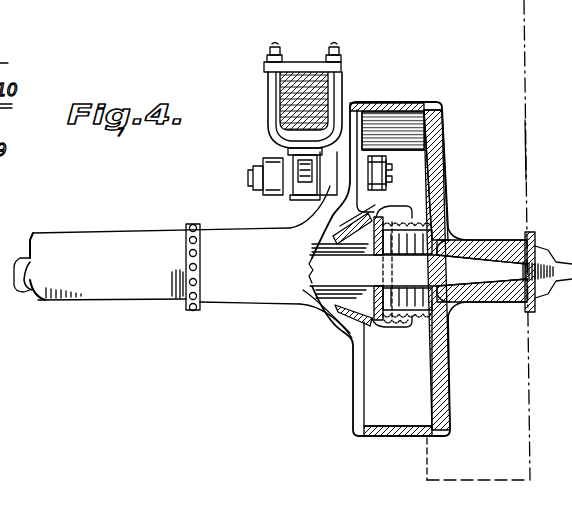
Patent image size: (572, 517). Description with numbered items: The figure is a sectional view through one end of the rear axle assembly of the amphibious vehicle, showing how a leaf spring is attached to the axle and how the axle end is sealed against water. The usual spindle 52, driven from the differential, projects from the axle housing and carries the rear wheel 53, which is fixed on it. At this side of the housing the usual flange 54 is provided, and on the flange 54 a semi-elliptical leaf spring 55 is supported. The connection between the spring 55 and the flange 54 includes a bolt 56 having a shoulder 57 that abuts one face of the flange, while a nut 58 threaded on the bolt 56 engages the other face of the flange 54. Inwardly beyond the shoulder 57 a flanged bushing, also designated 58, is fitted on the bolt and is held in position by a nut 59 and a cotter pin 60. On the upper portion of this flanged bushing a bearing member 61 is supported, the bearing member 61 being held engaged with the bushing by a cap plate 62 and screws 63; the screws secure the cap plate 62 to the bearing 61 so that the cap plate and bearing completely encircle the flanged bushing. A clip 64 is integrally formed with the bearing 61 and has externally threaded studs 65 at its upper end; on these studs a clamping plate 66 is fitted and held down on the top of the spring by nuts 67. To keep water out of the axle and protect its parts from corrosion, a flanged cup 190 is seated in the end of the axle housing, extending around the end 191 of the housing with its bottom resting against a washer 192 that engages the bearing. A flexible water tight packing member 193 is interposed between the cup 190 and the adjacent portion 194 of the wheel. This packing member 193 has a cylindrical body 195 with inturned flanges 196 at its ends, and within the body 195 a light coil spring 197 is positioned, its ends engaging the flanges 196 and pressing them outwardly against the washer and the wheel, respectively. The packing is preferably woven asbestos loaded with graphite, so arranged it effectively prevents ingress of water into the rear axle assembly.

The spindle 52 is at (314, 304).
The rear wheel 53 is at (522, 159).
The flange 54 is at (396, 106).
The semi-elliptical leaf spring 55 is at (342, 108).
The bolt 56 is at (392, 178).
The shoulder 57 is at (326, 187).
The nut 58 is at (388, 160).
The nut 59 is at (262, 175).
The cotter pin 60 is at (256, 166).
The bearing member 61 is at (393, 131).
The cap plate 62 is at (290, 152).
The screw 63 is at (305, 198).
The clip 64 is at (343, 84).
The externally threaded stud 65 is at (275, 44).
The clamping plate 66 is at (294, 62).
The nut 67 is at (267, 59).
The flanged cup 190 is at (404, 208).
The end of the axle housing 191 is at (360, 330).
The washer 192 is at (356, 315).
The flexible water tight packing member 193 is at (420, 222).
The adjacent portion of the wheel 194 is at (450, 315).
The cylindrical body 195 is at (400, 324).
The inturned flange 196 is at (398, 242).
The light coil spring 197 is at (432, 288).